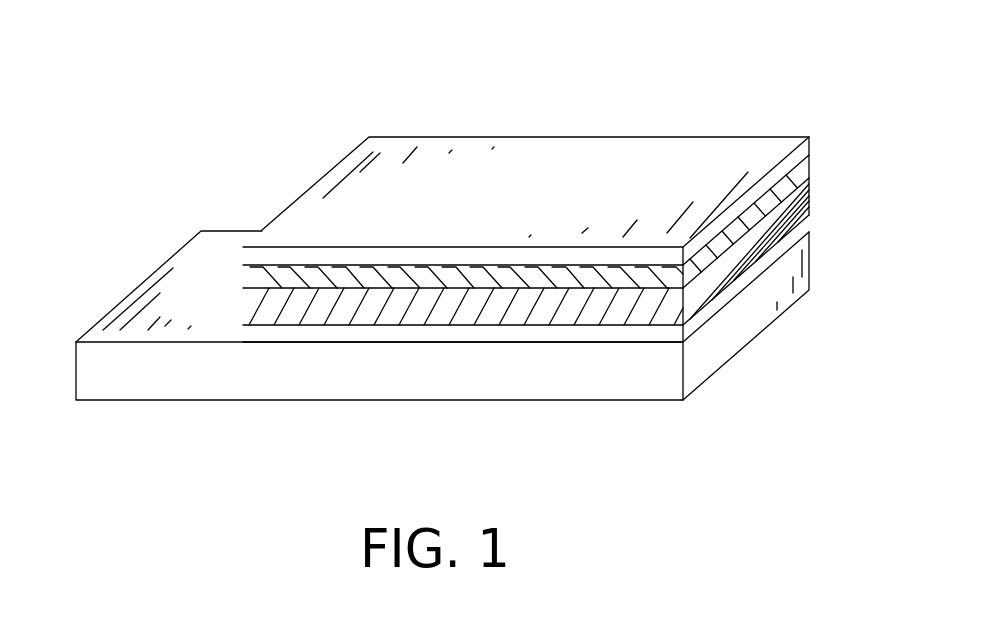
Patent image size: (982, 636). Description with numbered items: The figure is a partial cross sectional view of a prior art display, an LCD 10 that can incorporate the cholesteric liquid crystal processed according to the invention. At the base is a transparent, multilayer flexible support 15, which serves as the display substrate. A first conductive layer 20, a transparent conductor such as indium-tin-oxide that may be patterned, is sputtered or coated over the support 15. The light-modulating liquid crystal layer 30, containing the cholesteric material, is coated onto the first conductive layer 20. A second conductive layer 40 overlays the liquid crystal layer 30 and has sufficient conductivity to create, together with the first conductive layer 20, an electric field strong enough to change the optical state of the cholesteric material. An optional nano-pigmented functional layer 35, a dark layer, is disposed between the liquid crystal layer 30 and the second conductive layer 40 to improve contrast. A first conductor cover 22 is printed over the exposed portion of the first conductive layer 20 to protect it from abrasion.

The LCD 10 is at (378, 88).
The multilayer flexible support 15 is at (128, 392).
The first conductor cover 22 is at (186, 247).
The first conductive layer 20 is at (717, 303).
The light-modulating liquid crystal layer 30 is at (810, 210).
The nano-pigmented functional layer 35 is at (810, 163).
The second conductive layer 40 is at (690, 140).